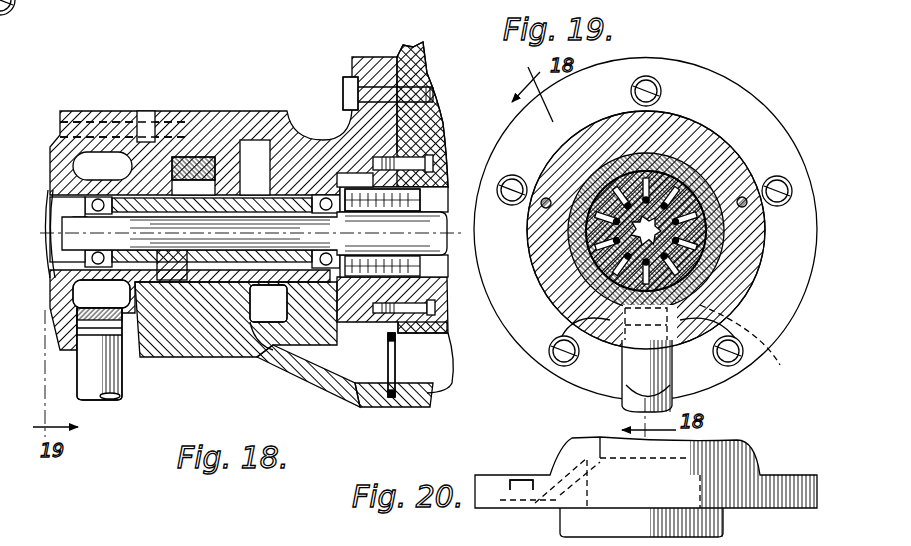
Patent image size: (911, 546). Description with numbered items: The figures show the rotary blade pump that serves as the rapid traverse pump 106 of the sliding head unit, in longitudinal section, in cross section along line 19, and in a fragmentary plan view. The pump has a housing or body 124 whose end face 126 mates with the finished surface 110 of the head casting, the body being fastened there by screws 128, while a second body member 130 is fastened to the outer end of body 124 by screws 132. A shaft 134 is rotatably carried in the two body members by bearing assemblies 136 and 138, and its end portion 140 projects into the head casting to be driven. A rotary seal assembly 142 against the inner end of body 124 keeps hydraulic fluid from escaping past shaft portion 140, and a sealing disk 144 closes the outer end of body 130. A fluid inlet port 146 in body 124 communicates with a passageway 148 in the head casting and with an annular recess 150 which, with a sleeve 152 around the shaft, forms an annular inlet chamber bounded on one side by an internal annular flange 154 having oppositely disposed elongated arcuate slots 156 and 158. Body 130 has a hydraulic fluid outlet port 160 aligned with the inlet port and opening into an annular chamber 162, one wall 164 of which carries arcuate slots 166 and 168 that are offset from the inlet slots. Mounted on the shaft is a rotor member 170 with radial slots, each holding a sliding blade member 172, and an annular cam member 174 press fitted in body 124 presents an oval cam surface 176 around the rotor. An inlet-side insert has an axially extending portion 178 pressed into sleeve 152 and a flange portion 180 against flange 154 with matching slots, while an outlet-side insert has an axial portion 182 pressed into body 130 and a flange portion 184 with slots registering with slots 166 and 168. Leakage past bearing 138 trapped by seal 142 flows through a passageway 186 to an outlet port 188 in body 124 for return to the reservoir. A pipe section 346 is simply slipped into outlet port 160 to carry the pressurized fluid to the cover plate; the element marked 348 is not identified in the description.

In FIG. 18, the rapid traverse pump 106 is at (300, 100).
In FIG. 18, the finished surface 110 is at (420, 57).
In FIG. 18, the housing or body 124 is at (227, 111).
In FIG. 19, the housing or body 124 is at (735, 155).
In FIG. 18, the end face 126 is at (433, 85).
In FIG. 18, the screws 128 is at (352, 76).
In FIG. 18, the second body member 130 is at (52, 140).
In FIG. 18, the screws 132 is at (75, 112).
In FIG. 18, the shaft 134 is at (275, 345).
In FIG. 19, the shaft 134 is at (728, 120).
In FIG. 18, the bearing assembly 136 is at (101, 294).
In FIG. 18, the bearing assembly 138 is at (330, 282).
In FIG. 18, the end portion of shaft 140 is at (442, 165).
In FIG. 18, the rotary seal assembly 142 is at (440, 125).
In FIG. 18, the sealing disk 144 is at (40, 140).
In FIG. 18, the fluid inlet port 146 is at (353, 382).
In FIG. 18, the passageway 148 is at (410, 386).
In FIG. 18, the annular recess 150 is at (273, 340).
In FIG. 18, the sleeve 152 is at (266, 111).
In FIG. 18, the internal annular flange 154 is at (248, 111).
In FIG. 19, the elongated arcuate slot 156 is at (700, 118).
In FIG. 19, the elongated arcuate slot 158 is at (600, 355).
In FIG. 18, the hydraulic fluid outlet port 160 is at (138, 360).
In FIG. 18, the annular chamber 162 is at (137, 111).
In FIG. 18, the wall 164 is at (187, 358).
In FIG. 18, the elongated arcuate slot 166 is at (158, 150).
In FIG. 19, the elongated arcuate slot 166 is at (608, 165).
In FIG. 19, the elongated arcuate slot 168 is at (760, 360).
In FIG. 18, the rotor member 170 is at (208, 357).
In FIG. 19, the rotor member 170 is at (705, 236).
In FIG. 19, the blade member 172 is at (658, 168).
In FIG. 18, the annular cam member 174 is at (198, 370).
In FIG. 19, the annular cam member 174 is at (535, 280).
In FIG. 19, the cam surface 176 is at (565, 300).
In FIG. 18, the axially extending portion 178 is at (292, 140).
In FIG. 18, the radially extending flange portion 180 is at (230, 111).
In FIG. 18, the axially extending portion 182 is at (70, 122).
In FIG. 18, the flange portion 184 is at (205, 150).
In FIG. 20, the passageway 186 is at (552, 508).
In FIG. 20, the outlet port 188 is at (520, 478).
In FIG. 18, the pipe section 346 is at (110, 398).
In FIG. 18, the conduit 348 is at (77, 350).
In FIG. 18, the section line 19— 19 is at (187, 111).